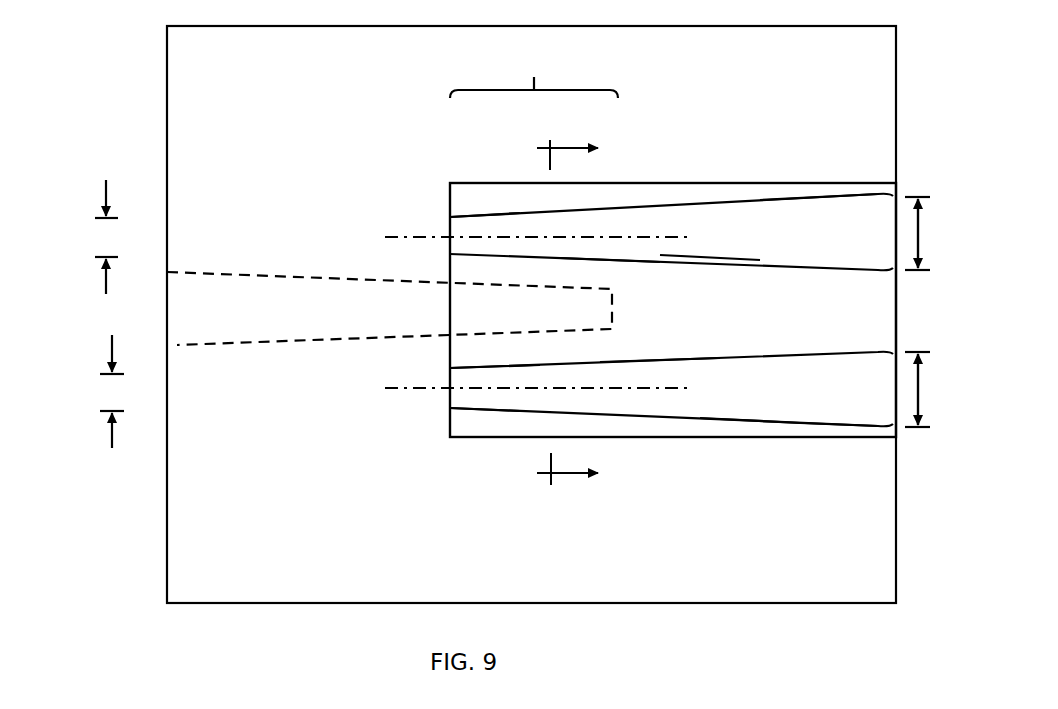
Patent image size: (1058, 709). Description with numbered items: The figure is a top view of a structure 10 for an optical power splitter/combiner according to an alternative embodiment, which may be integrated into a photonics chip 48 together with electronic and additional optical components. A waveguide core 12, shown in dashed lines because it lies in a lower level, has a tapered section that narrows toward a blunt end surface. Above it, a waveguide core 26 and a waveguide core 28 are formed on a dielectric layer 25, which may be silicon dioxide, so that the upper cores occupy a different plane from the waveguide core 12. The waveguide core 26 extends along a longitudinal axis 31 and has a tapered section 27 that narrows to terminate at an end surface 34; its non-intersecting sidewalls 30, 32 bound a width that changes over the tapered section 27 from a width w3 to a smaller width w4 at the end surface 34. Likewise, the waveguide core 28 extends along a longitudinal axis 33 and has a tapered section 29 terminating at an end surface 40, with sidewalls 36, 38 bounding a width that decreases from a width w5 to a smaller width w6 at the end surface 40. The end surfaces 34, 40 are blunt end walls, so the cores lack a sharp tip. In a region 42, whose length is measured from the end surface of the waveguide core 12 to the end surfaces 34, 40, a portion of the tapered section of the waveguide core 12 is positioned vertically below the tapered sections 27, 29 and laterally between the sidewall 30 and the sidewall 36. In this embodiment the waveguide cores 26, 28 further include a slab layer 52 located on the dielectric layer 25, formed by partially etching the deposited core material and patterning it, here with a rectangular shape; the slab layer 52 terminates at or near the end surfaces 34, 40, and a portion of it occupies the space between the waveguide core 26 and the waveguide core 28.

The structure 10 is at (305, 100).
The waveguide core 12 is at (294, 268).
The dielectric layer 25 is at (252, 557).
The waveguide core 26 is at (672, 198).
The tapered section 27 is at (720, 232).
The waveguide core 28 is at (665, 424).
The tapered section 29 is at (740, 390).
The sidewall 30 is at (632, 262).
The longitudinal axis 31 is at (403, 236).
The sidewall 32 is at (795, 205).
The longitudinal axis 33 is at (392, 390).
The end surface 34 is at (447, 216).
The sidewall 36 is at (690, 356).
The sidewall 38 is at (808, 415).
The end surface 40 is at (446, 400).
The region 42 is at (534, 71).
The photonics chip 48 is at (145, 60).
The slab layer 52 is at (527, 347).
The width w3 is at (931, 233).
The width w4 is at (89, 237).
The width w5 is at (931, 389).
The width w6 is at (96, 391).